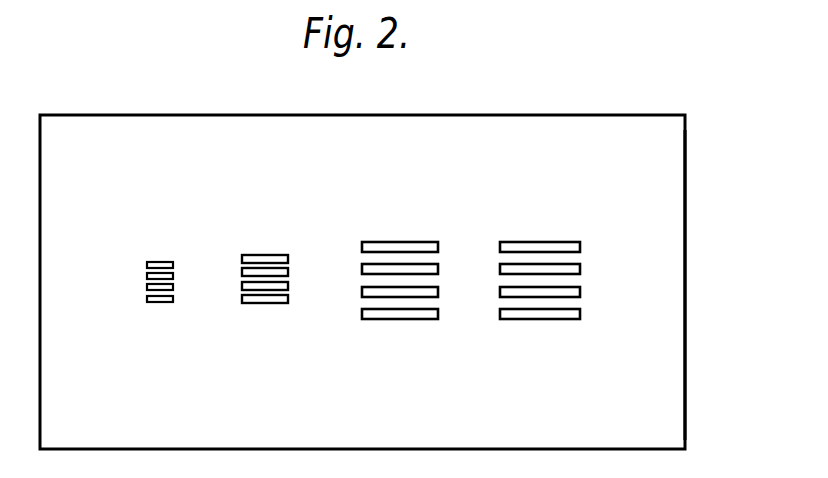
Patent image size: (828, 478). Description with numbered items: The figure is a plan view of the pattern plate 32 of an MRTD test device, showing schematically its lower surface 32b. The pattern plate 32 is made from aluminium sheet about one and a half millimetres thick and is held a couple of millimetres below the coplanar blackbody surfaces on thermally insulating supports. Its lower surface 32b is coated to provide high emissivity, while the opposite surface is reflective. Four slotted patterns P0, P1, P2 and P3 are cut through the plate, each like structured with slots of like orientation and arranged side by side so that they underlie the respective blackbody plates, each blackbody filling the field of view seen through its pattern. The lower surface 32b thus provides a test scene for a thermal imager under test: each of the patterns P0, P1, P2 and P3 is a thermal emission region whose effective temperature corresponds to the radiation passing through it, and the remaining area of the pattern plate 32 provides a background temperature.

The pattern plate 32 is at (686, 392).
The lower surface 32b is at (658, 199).
The slotted pattern P3 is at (158, 262).
The slotted pattern P2 is at (264, 255).
The slotted pattern P1 is at (398, 241).
The slotted pattern P0 is at (540, 241).